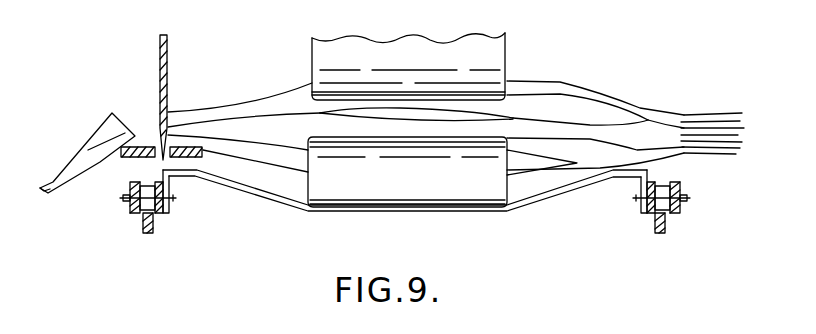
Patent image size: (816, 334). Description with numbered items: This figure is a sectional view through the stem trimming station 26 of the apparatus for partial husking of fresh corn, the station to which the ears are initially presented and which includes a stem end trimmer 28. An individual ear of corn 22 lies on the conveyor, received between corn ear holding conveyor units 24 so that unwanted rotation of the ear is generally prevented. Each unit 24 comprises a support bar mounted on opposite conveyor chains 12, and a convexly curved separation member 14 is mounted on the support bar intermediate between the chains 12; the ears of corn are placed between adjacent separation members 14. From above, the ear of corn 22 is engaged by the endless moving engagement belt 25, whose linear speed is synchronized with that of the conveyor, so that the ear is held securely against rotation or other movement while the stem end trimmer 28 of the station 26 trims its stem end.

The conveyor chain 12 is at (168, 208).
The separation member 14 is at (465, 193).
The ear of corn 22 is at (574, 110).
The corn ear holding conveyor unit 24 is at (567, 187).
The engagement belt 25 is at (499, 53).
The stem trimming station 26 is at (279, 43).
The stem end trimmer 28 is at (167, 72).